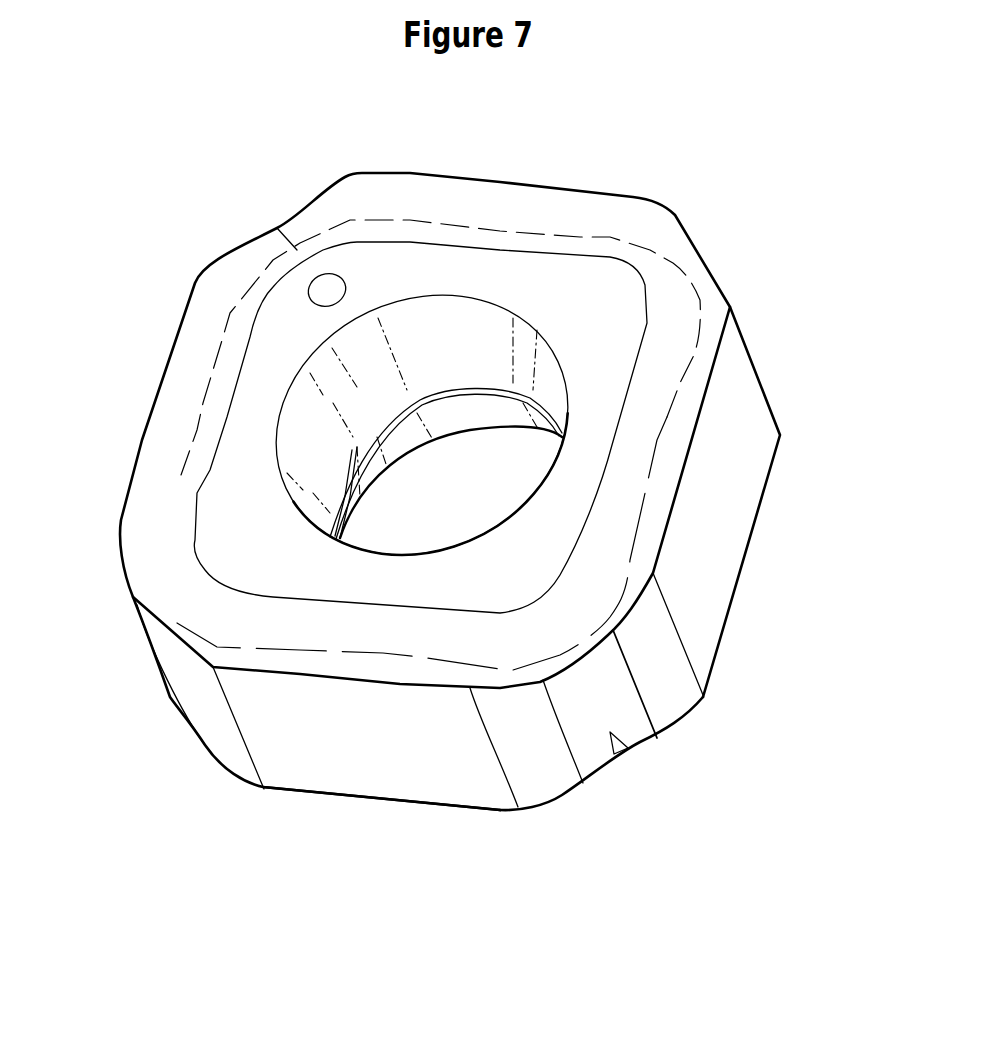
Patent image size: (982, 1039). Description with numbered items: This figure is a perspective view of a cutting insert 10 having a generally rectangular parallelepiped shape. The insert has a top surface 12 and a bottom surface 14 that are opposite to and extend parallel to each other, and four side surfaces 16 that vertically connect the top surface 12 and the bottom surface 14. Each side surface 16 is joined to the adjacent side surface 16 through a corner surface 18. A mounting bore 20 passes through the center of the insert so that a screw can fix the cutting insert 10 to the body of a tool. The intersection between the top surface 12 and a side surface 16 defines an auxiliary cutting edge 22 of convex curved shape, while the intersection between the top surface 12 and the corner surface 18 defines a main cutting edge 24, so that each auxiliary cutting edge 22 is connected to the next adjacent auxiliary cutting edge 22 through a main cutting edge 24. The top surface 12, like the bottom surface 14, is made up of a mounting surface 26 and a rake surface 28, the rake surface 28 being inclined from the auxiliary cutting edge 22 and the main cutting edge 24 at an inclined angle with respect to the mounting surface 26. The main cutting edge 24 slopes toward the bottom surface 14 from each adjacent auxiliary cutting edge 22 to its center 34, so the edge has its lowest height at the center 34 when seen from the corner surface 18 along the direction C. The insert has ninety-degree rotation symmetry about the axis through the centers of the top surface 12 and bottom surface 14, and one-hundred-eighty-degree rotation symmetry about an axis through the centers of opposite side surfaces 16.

The cutting insert 10 is at (740, 261).
The top surface 12 is at (240, 402).
The bottom surface 14 is at (753, 607).
The side surface 16 is at (763, 468).
The corner surface 18 is at (636, 729).
The mounting bore 20 is at (470, 336).
The auxiliary cutting edge 22 is at (683, 473).
The main cutting edge 24 is at (517, 686).
The mounting surface 26 is at (218, 522).
The rake surface 28 is at (200, 313).
The center of the main cutting edge 34 is at (550, 616).
The viewing direction C is at (611, 734).